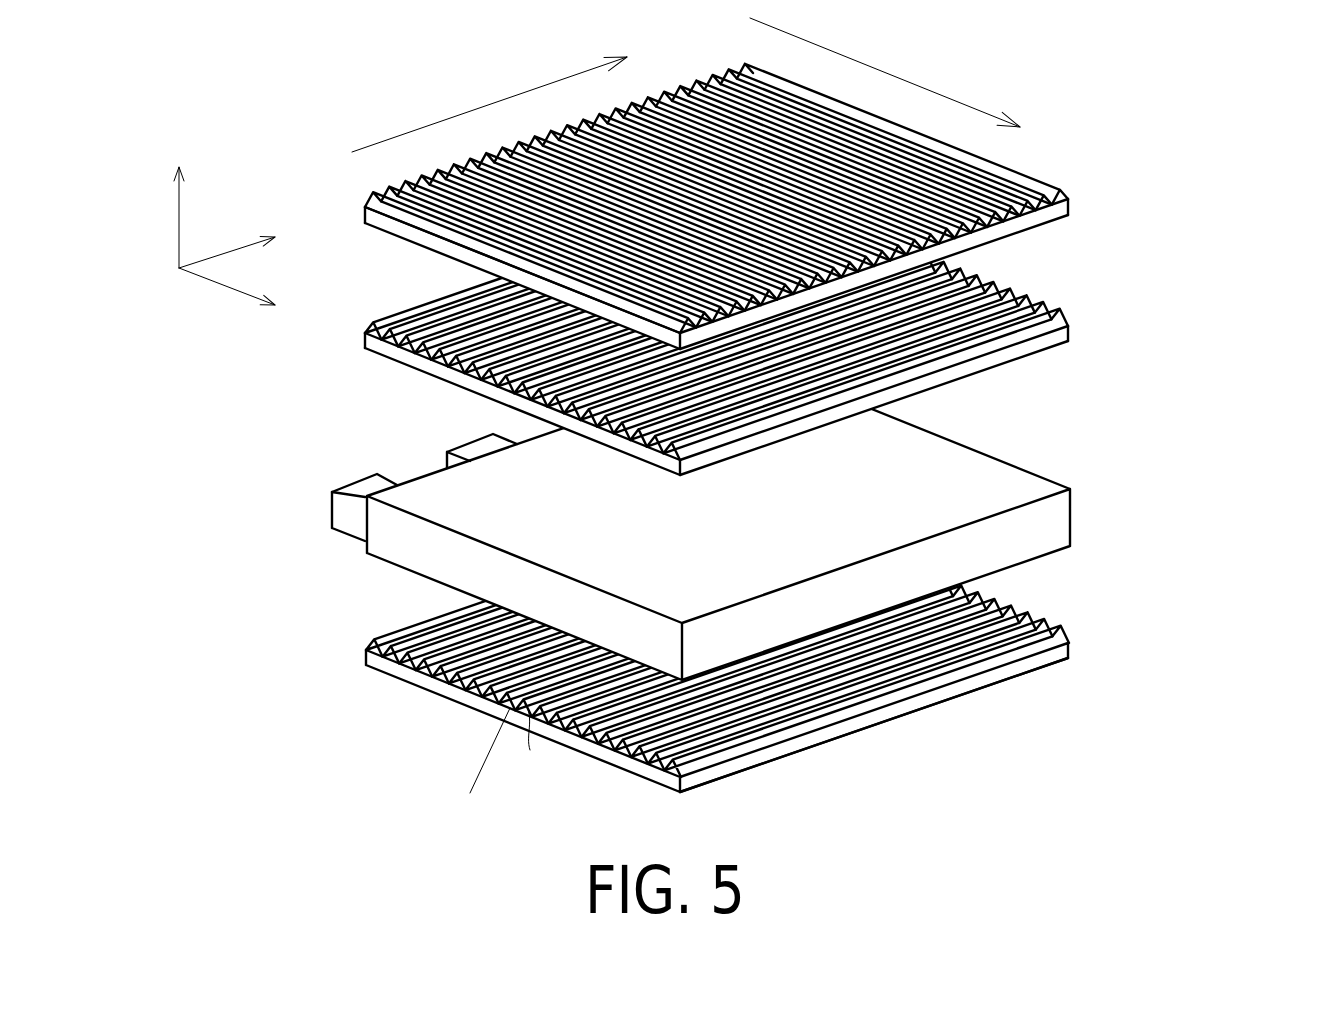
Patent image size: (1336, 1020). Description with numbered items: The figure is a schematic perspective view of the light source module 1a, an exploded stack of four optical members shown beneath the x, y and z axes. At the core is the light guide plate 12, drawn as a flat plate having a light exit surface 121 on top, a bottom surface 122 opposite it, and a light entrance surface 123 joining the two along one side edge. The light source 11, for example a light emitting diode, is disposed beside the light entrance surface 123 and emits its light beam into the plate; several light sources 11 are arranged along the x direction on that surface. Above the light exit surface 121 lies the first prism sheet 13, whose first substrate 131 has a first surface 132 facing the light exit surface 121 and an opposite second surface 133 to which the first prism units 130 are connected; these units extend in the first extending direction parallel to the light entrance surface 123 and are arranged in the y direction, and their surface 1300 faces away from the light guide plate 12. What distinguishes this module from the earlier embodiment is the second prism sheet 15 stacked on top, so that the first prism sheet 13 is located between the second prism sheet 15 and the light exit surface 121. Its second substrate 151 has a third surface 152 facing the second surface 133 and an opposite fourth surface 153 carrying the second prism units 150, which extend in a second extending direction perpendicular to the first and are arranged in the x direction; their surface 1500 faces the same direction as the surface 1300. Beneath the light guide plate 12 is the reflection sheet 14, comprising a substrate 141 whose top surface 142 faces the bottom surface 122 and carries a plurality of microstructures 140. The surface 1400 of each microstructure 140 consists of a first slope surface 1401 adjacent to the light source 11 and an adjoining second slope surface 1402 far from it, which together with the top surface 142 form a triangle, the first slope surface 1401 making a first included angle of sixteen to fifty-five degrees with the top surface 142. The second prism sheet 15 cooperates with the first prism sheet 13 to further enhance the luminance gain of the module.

The light source module 1a is at (1190, 46).
The light source 11 is at (367, 490).
The light guide plate 12 is at (355, 538).
The light exit surface 121 is at (413, 507).
The bottom surface 122 is at (392, 565).
The light entrance surface 123 is at (363, 525).
The first prism sheet 13 is at (802, 330).
The first prism units 130 is at (780, 324).
The surface of the first prism units 1300 is at (1058, 333).
The first substrate 131 is at (780, 400).
The first surface 132 is at (978, 380).
The second surface 133 is at (1008, 350).
The reflection sheet 14 is at (821, 672).
The microstructures 140 is at (410, 670).
The surface of the microstructures 1400 is at (833, 641).
The first slope surface 1401 is at (1037, 602).
The second slope surface 1402 is at (1055, 633).
The substrate 141 is at (387, 663).
The top surface 142 is at (642, 765).
The second prism sheet 15 is at (827, 205).
The second prism units 150 is at (805, 198).
The surface of the second prism units 1500 is at (1043, 188).
The second substrate 151 is at (798, 274).
The third surface 152 is at (1035, 230).
The fourth surface 153 is at (1055, 210).